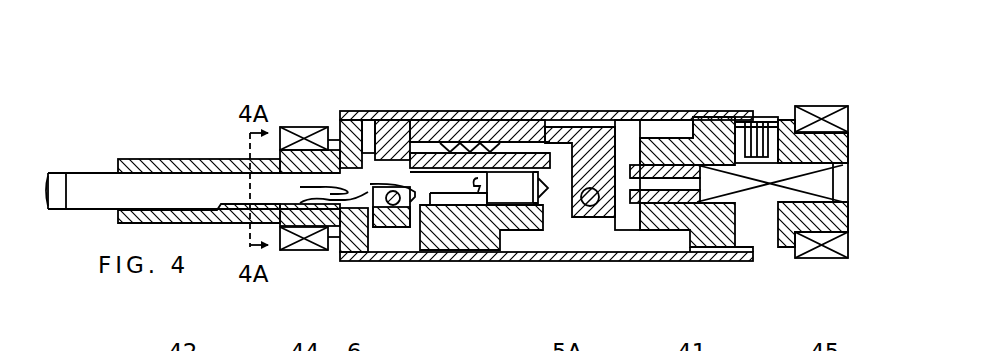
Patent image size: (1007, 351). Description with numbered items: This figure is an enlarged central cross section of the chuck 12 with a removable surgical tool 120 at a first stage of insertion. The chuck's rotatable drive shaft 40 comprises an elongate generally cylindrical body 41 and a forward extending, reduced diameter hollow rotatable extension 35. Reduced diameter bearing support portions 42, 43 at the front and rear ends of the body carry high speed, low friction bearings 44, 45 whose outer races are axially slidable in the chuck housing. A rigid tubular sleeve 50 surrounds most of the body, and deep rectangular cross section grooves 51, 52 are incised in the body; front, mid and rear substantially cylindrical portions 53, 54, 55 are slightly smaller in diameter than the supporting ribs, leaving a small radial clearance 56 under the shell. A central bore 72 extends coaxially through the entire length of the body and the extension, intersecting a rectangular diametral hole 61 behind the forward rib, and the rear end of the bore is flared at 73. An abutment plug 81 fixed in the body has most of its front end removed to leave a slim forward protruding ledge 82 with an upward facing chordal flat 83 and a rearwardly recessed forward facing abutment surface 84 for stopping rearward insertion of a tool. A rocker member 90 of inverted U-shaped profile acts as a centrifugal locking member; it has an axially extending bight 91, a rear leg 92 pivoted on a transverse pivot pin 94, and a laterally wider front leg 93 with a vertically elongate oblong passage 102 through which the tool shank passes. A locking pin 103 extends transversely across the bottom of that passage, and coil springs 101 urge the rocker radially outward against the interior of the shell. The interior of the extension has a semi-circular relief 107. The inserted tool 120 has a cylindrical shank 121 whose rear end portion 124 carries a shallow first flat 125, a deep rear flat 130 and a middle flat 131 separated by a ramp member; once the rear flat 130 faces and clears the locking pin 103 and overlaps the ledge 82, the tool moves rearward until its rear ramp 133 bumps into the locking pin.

The chuck 12 is at (427, 109).
The hollow rotatable extension 35 is at (135, 158).
The rotatable drive shaft 40 is at (856, 130).
The body 41 is at (850, 223).
The front bearing support portion 42 is at (290, 127).
The rear bearing support portion 43 is at (833, 120).
The front bearing 44 is at (307, 127).
The rear bearing 45 is at (812, 107).
The sleeve 50 is at (665, 111).
The front groove 51 is at (545, 253).
The rear groove 52 is at (668, 232).
The front substantially cylindrical portion 53 is at (457, 240).
The mid substantially cylindrical portion 54 is at (600, 235).
The rear substantially cylindrical portion 55 is at (787, 242).
The radial clearance 56 is at (512, 245).
The rectangular hole 61 is at (393, 227).
The central bore 72 is at (178, 175).
The flared rear end 73 is at (847, 163).
The abutment plug 81 is at (497, 235).
The ledge 82 is at (428, 212).
The chordal flat 83 is at (418, 235).
The abutment surface 84 is at (480, 186).
The rocker member 90 is at (538, 110).
The bight 91 is at (562, 140).
The rear leg 92 is at (600, 160).
The front leg 93 is at (392, 140).
The pivot pin 94 is at (586, 207).
The coil springs 101 is at (489, 153).
The passage 102 is at (388, 157).
The locking pin 103 is at (378, 212).
The relief 107 is at (292, 222).
The surgical tool 120 is at (96, 120).
The shank 121 is at (58, 211).
The rear end portion 124 is at (95, 173).
The first flat 125 is at (222, 225).
The rear flat 130 is at (370, 184).
The middle flat 131 is at (300, 187).
The rear ramp 133 is at (320, 222).